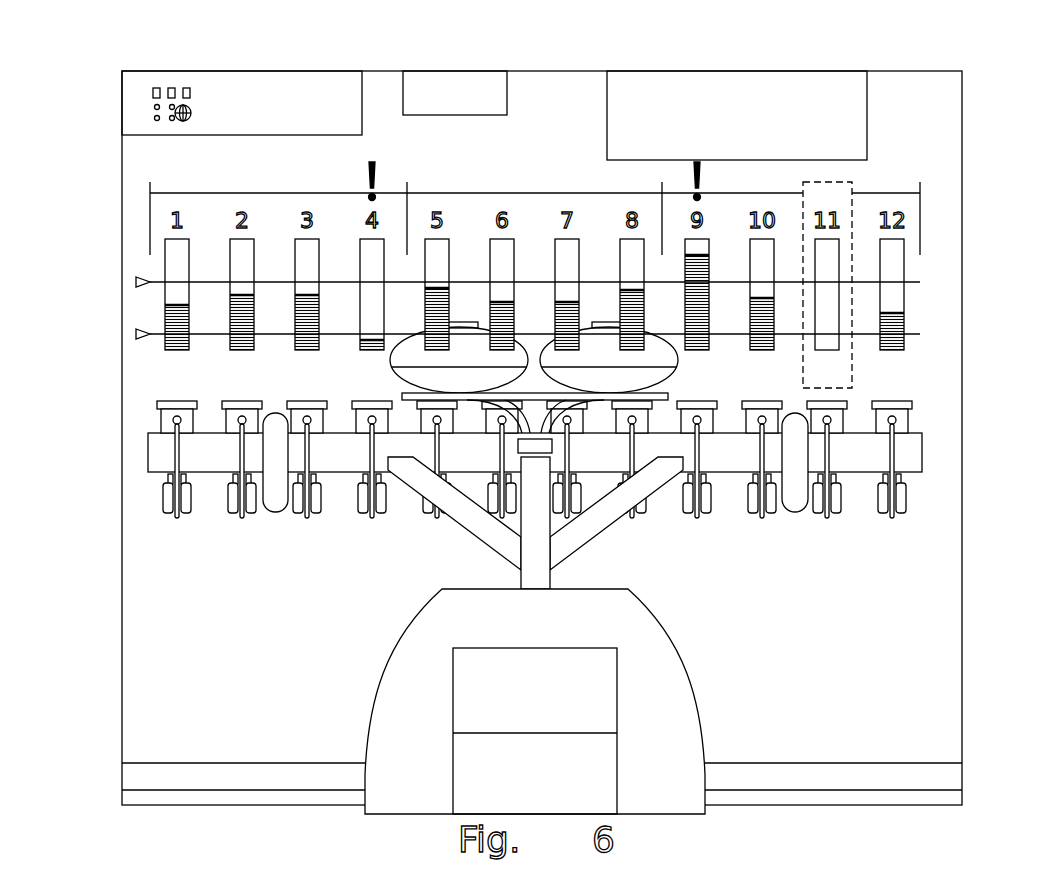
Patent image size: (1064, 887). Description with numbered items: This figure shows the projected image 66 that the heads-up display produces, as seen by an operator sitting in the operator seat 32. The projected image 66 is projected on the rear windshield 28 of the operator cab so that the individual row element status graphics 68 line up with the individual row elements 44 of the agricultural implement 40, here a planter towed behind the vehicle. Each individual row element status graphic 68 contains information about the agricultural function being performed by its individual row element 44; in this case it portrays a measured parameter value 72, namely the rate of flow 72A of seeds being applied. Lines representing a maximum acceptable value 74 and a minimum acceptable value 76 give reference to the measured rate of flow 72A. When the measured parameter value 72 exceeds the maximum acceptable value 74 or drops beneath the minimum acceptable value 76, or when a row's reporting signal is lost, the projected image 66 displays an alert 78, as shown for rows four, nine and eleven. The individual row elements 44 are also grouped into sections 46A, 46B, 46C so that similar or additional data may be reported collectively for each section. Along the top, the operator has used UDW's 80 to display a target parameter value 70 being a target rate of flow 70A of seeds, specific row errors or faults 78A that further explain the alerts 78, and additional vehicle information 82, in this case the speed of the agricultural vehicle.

The projected image 66 is at (922, 119).
The target parameter value 70 is at (243, 75).
The rate of flow 70A is at (327, 102).
The additional vehicle information 82 is at (436, 75).
The UDW 80 is at (140, 103).
The row errors or faults 78A is at (682, 75).
The alert 78 is at (383, 172).
The section 46A is at (282, 193).
The section 46B is at (527, 193).
The section 46C is at (893, 193).
The maximum acceptable value 74 is at (136, 282).
The minimum acceptable value 76 is at (136, 334).
The rate of flow 72A is at (165, 315).
The measured parameter value 72 is at (254, 320).
The individual row element status graphic 68 is at (905, 310).
The agricultural implement 40 is at (925, 452).
The individual row element 44 is at (242, 401).
The rear windshield 28 is at (905, 593).
The operator seat 32 is at (522, 703).